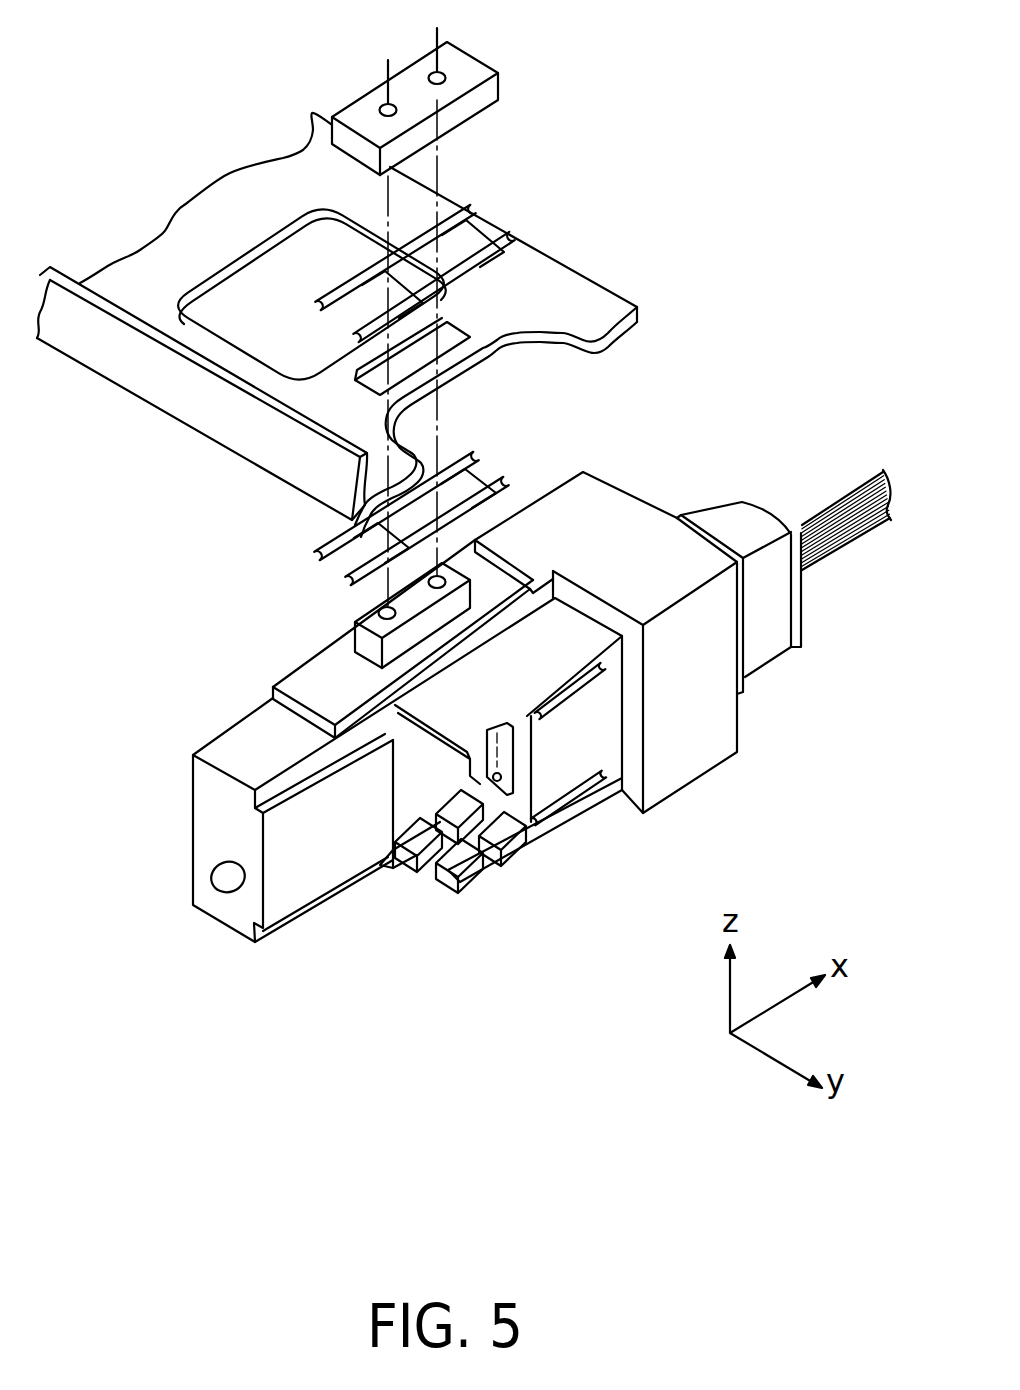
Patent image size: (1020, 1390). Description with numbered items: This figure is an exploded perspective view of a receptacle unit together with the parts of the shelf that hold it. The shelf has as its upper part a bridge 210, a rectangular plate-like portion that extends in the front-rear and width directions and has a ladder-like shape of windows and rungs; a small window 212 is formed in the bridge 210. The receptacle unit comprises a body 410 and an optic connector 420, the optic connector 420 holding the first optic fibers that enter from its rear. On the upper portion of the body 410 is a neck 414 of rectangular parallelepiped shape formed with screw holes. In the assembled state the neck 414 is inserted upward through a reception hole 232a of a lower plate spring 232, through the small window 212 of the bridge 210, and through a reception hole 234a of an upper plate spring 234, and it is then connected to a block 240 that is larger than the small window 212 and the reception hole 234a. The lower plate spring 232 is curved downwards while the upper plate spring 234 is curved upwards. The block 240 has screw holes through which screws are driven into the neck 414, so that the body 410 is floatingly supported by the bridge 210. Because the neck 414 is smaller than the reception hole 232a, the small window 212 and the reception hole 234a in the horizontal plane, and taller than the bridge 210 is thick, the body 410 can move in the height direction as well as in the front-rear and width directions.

The bridge 210 is at (597, 312).
The small window 212 is at (450, 323).
The lower plate spring 232 is at (465, 491).
The reception hole 232a is at (458, 485).
The upper plate spring 234 is at (407, 236).
The reception hole 234a is at (352, 276).
The block 240 is at (474, 70).
The body 410 is at (617, 518).
The neck 414 is at (362, 622).
The optic connector 420 is at (746, 688).